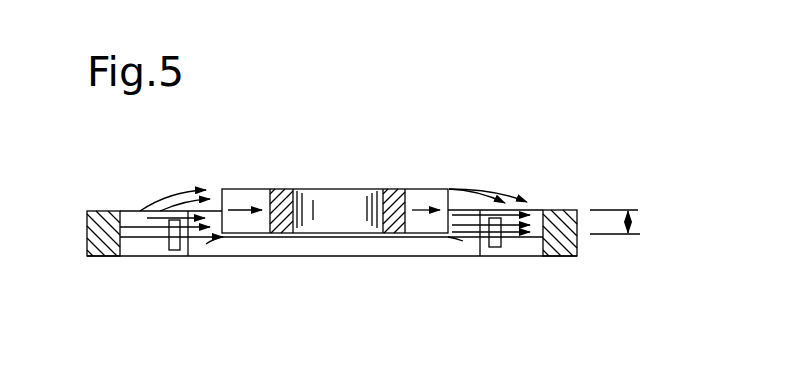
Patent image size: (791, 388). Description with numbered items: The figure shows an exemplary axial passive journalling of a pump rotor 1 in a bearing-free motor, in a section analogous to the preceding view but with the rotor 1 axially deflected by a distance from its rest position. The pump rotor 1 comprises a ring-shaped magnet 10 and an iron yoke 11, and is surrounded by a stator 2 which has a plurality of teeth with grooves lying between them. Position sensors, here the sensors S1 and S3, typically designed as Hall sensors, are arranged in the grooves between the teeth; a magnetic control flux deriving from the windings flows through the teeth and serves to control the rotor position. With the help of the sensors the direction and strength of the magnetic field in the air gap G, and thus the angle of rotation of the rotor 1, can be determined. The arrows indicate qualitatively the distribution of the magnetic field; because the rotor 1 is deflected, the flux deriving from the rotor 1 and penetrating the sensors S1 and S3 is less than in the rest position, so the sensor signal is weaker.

The pump rotor 1 is at (421, 161).
The stator 2 is at (553, 204).
The ring-shaped magnet 10 is at (432, 202).
The iron yoke 11 is at (278, 189).
The position sensor S1 is at (495, 247).
The position sensor S3 is at (175, 250).
The air gap G is at (207, 245).